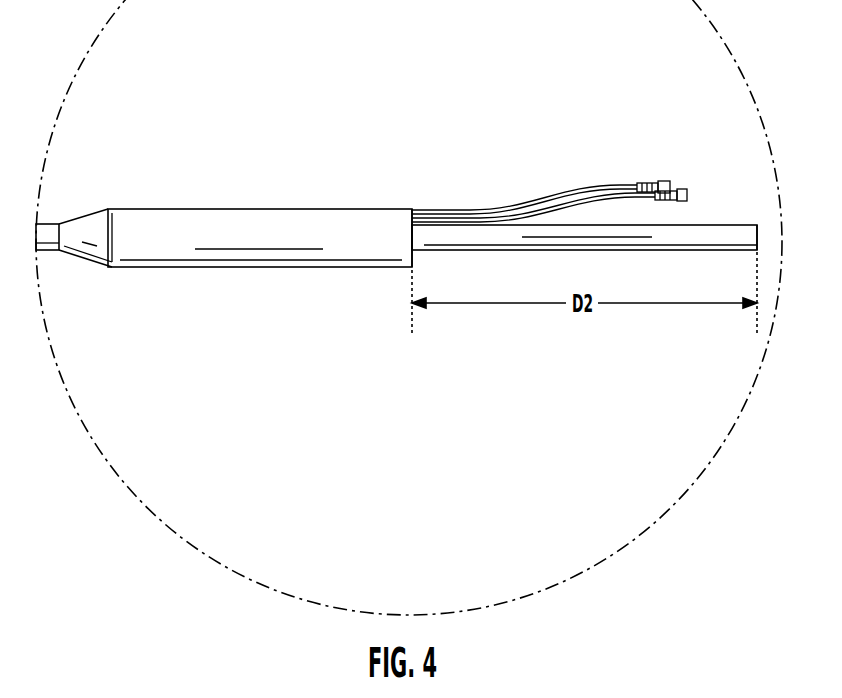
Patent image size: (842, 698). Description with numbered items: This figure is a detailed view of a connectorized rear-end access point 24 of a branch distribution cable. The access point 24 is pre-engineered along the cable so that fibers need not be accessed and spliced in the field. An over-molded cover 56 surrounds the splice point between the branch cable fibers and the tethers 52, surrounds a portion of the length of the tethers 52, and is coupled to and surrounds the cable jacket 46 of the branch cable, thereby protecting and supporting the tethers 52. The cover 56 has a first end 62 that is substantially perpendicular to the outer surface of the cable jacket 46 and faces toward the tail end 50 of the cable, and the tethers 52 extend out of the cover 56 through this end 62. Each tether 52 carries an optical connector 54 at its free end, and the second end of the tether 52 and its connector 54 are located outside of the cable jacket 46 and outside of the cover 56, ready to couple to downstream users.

The rear-end access point 24 is at (386, 282).
The cable jacket 46 is at (488, 238).
The tail end 50 is at (764, 218).
The tether 52 is at (593, 202).
The optical connector 54 is at (676, 189).
The over-molded cover 56 is at (335, 220).
The first end of cover 62 is at (424, 263).